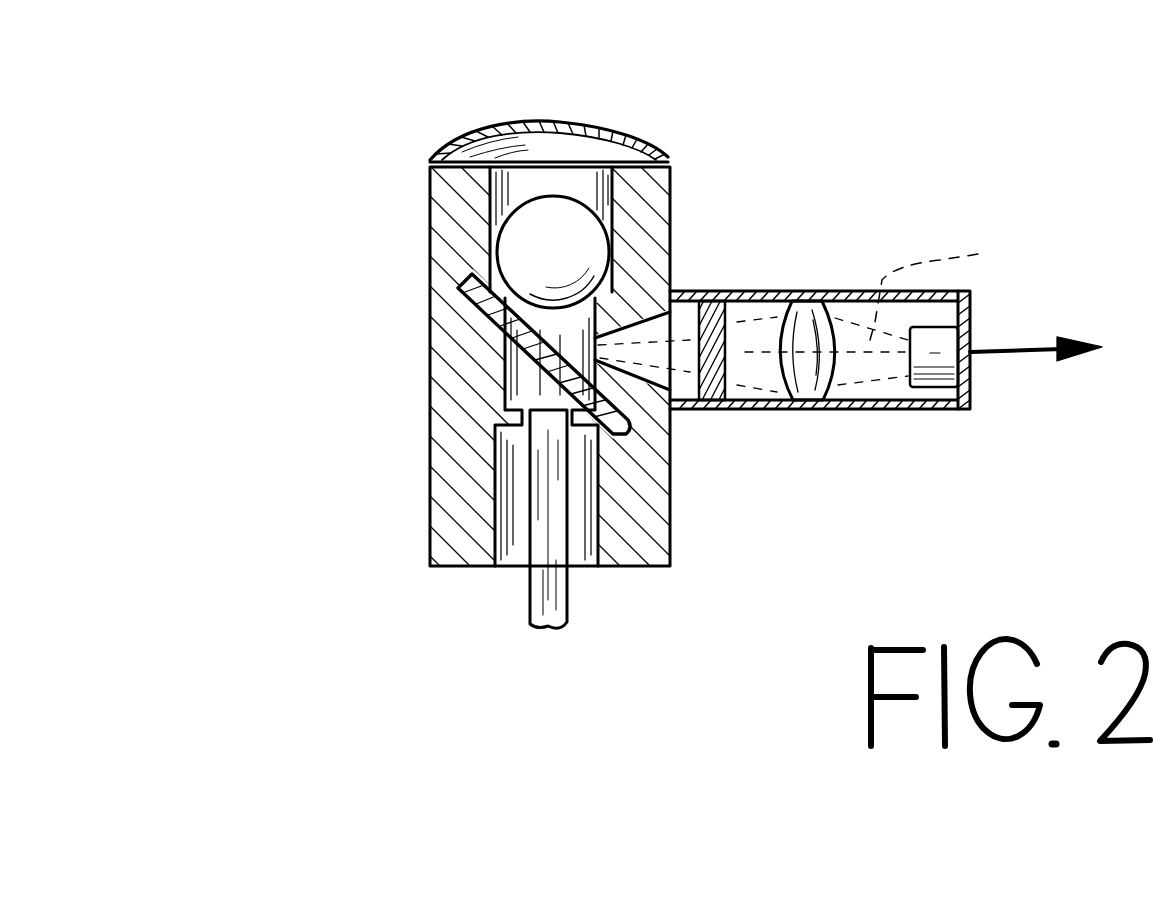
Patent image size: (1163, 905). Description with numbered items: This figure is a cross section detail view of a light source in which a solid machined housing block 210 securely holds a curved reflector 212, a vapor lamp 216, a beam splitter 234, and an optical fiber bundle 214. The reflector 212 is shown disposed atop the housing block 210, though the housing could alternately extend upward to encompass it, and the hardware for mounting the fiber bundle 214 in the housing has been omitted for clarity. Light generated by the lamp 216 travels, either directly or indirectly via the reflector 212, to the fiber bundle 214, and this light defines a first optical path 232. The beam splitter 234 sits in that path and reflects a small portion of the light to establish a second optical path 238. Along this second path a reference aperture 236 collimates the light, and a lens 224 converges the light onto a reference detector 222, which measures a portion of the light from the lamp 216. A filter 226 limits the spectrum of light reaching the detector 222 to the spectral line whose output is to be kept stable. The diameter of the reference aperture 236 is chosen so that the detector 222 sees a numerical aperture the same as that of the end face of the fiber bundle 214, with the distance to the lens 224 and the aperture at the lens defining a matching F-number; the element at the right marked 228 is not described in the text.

The housing block 210 is at (427, 210).
The curved reflector 212 is at (600, 127).
The optical fiber bundle 214 is at (527, 597).
The vapor lamp 216 is at (612, 210).
The reference detector 222 is at (947, 388).
The lens 224 is at (847, 410).
The filter 226 is at (748, 410).
The output signal arrow 228 is at (1027, 349).
The first optical path 232 is at (503, 372).
The beam splitter 234 is at (498, 305).
The reference aperture 236 is at (612, 295).
The second optical path 238 is at (985, 253).